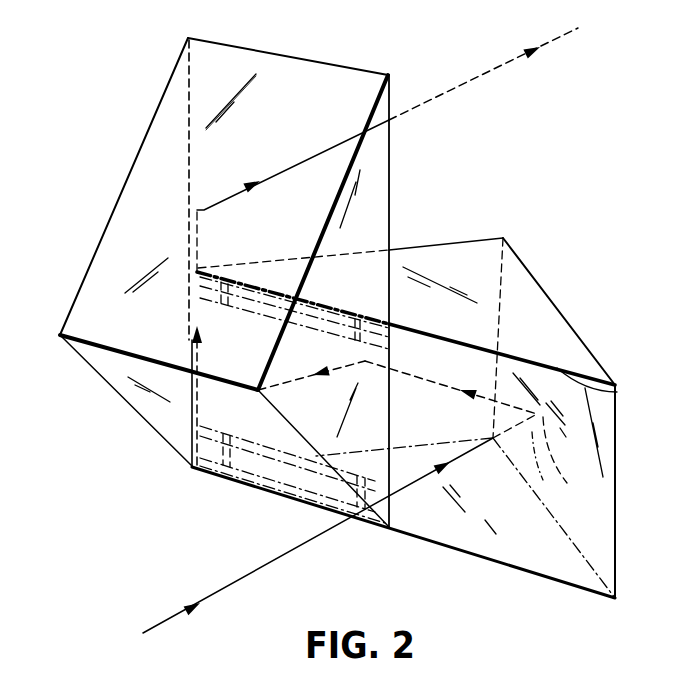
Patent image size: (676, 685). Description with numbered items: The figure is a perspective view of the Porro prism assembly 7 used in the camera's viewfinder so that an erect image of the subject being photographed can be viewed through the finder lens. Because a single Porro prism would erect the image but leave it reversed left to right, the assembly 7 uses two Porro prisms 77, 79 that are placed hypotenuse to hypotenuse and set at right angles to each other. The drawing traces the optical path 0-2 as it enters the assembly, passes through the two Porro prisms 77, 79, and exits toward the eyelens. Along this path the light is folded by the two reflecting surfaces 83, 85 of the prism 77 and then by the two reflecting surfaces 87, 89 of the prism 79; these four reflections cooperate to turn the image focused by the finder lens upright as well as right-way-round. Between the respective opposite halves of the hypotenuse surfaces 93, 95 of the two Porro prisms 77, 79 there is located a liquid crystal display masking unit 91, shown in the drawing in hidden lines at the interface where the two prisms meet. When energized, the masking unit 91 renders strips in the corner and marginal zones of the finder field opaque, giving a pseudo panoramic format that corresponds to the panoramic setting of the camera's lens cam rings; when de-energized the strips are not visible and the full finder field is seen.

The Porro prism assembly 7 is at (108, 219).
The Porro prism 77 is at (107, 350).
The Porro prism 79 is at (620, 394).
The reflecting surface 83 is at (222, 405).
The reflecting surface 85 is at (223, 170).
The reflecting surface 87 is at (561, 477).
The reflecting surface 89 is at (363, 368).
The liquid crystal display masking unit 91 is at (277, 478).
The hypotenuse surface 93 is at (380, 359).
The hypotenuse surface 95 is at (397, 334).
The optical path 0-2 is at (163, 625).